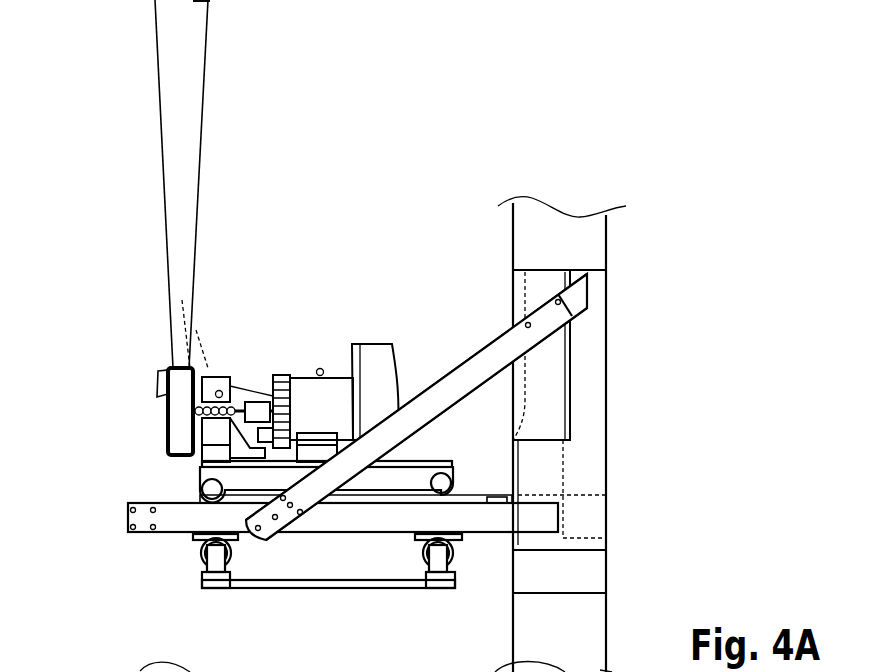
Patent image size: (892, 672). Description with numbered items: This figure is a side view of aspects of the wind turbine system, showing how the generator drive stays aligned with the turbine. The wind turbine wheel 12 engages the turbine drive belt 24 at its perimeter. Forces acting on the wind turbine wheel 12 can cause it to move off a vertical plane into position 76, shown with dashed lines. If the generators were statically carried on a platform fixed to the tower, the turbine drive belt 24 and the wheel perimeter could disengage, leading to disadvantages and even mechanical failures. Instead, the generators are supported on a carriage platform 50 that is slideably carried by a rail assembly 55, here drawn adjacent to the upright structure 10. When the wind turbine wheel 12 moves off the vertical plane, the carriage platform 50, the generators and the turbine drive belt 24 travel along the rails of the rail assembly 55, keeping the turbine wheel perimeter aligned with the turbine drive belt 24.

The mast column 10 is at (607, 445).
The wind turbine wheel 12 is at (158, 88).
The turbine drive belt 24 is at (165, 415).
The carriage platform 50 is at (200, 476).
The rail assembly 55 is at (128, 515).
The position 76 is at (198, 327).